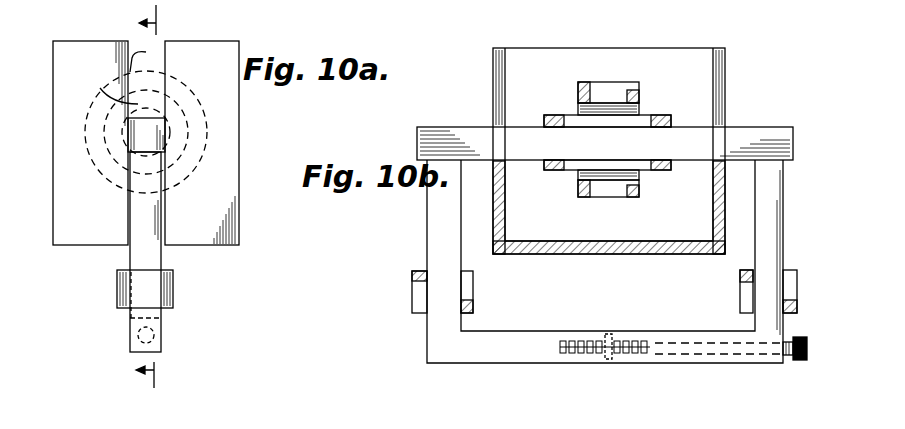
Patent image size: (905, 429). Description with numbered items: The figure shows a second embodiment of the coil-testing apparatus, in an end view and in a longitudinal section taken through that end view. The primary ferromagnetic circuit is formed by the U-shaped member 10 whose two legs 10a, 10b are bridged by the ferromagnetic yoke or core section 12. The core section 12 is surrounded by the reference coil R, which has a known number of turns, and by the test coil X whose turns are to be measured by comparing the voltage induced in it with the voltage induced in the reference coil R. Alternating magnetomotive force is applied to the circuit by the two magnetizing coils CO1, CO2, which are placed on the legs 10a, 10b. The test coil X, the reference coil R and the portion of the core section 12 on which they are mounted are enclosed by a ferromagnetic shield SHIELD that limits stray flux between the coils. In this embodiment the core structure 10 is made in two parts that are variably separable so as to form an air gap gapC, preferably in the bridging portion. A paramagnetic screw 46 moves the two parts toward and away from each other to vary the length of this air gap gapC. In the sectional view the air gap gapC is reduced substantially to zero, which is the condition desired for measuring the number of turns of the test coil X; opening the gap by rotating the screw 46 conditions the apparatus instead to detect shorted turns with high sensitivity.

In FIG. 10A, the U-shaped member 10 is at (161, 223).
In FIG. 10B, the U-shaped member 10 is at (783, 185).
In FIG. 10A, the yoke or core section 12 is at (152, 120).
In FIG. 10B, the yoke or core section 12 is at (738, 127).
In FIG. 10B, the paramagnetic screw 46 is at (790, 362).
In FIG. 10B, the magnetizing coil CO1 is at (473, 300).
In FIG. 10A, the magnetizing coil CO2 is at (173, 290).
In FIG. 10B, the magnetizing coil CO2 is at (740, 290).
In FIG. 10A, the test coil X is at (144, 55).
In FIG. 10B, the test coil X is at (615, 80).
In FIG. 10A, the reference coil R is at (110, 85).
In FIG. 10B, the reference coil R is at (650, 115).
In FIG. 10B, the shield device SHIELD is at (505, 233).
In FIG. 10B, the air gap C gapC is at (611, 320).
In FIG. 10B, the leg 10a is at (785, 236).
In FIG. 10A, the leg 10b is at (161, 197).
In FIG. 10B, the leg 10b is at (457, 232).